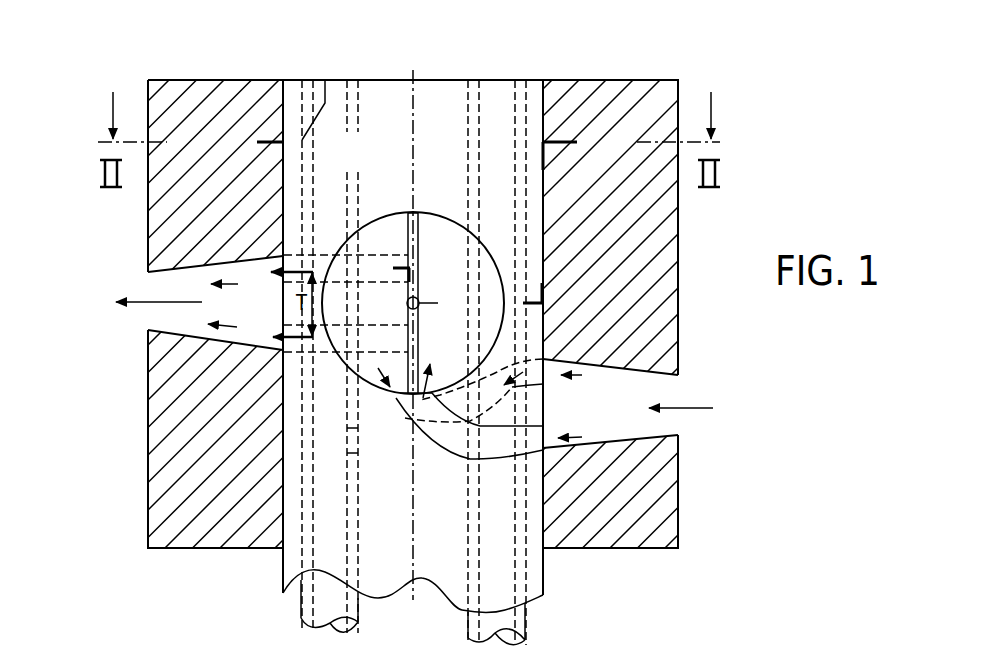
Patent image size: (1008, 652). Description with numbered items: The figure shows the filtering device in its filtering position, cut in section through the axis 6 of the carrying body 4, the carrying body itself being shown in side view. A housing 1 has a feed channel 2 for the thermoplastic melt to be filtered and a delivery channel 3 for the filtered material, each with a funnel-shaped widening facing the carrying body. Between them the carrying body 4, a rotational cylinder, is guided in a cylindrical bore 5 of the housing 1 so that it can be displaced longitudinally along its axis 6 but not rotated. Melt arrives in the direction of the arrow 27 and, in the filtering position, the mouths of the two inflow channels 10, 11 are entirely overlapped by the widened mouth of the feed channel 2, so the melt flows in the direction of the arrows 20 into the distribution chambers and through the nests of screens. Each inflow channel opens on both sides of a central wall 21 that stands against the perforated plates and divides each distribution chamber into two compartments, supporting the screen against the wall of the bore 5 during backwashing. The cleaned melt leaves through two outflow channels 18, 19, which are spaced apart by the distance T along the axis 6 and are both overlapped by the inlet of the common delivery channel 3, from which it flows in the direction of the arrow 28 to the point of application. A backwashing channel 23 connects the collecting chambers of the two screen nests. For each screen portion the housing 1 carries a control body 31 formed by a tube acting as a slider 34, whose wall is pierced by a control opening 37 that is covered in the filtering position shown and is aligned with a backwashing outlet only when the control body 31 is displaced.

The housing 1 is at (601, 77).
The feed channel 2 is at (658, 420).
The delivery channel 3 is at (172, 315).
The carrying body 4 is at (467, 158).
The cylindrical bore 5 is at (540, 103).
The axis 6 is at (410, 135).
The inflow channel 10 is at (490, 400).
The inflow channel 11 is at (455, 435).
The outflow channel 18 is at (345, 356).
The outflow channel 19 is at (373, 353).
The arrows 20 is at (237, 284).
The central wall 21 is at (407, 243).
The backwashing channel 23 is at (417, 295).
The arrow 27 is at (688, 405).
The arrow 28 is at (155, 302).
The control body 31 is at (297, 110).
The slider 34 is at (325, 80).
The control opening 37 is at (355, 447).